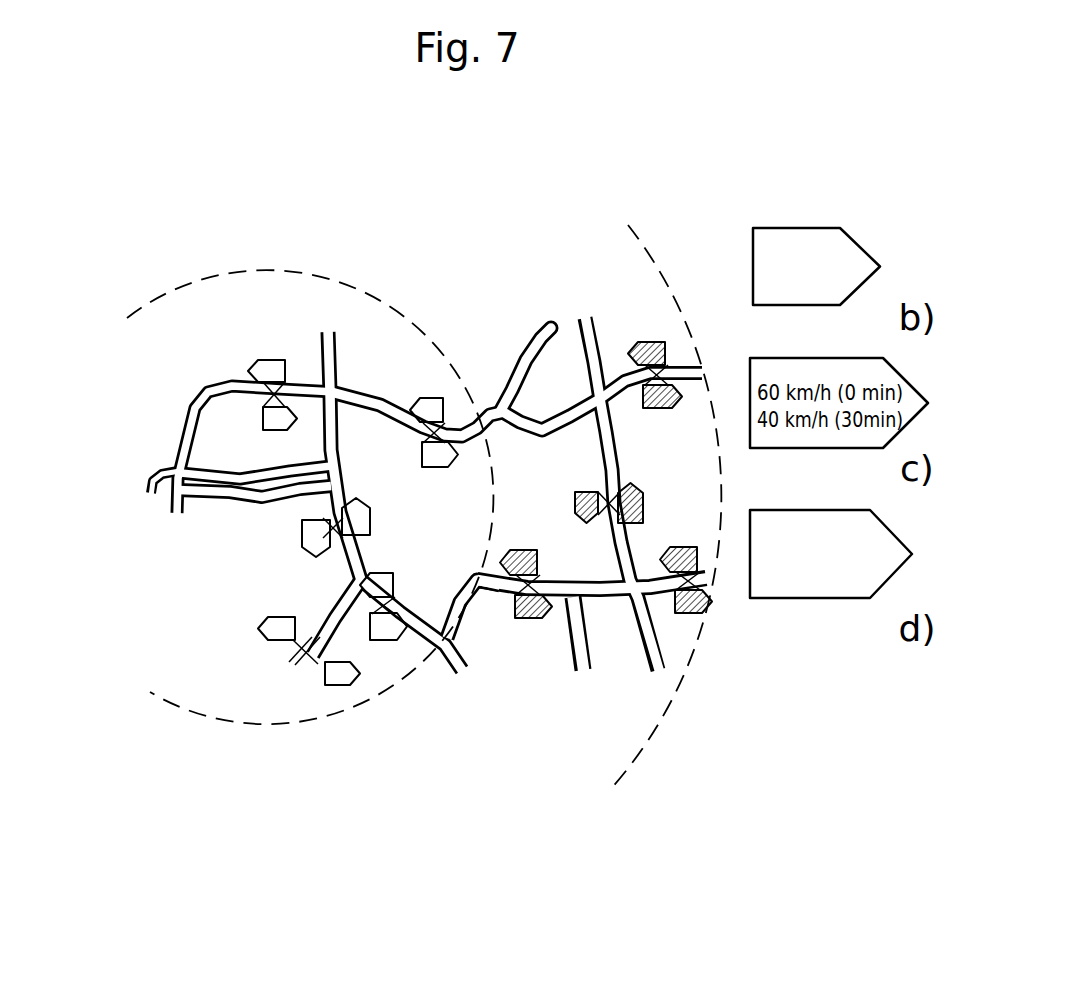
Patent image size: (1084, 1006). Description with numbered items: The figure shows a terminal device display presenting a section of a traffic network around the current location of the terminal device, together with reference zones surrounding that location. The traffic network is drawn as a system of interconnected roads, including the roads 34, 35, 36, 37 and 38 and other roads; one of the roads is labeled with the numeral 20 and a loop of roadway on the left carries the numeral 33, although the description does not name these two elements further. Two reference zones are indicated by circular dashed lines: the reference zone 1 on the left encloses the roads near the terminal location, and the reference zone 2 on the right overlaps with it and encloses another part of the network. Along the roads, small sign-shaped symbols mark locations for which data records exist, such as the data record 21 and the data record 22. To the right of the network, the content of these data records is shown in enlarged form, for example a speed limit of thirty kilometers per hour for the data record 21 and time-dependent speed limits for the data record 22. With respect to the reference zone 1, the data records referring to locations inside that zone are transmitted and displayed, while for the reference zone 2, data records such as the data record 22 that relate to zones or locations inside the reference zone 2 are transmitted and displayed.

The reference zone 1 is at (253, 302).
The reference zone 2 is at (613, 252).
The road 20 is at (255, 497).
The data record 21 is at (437, 462).
The data record 22 is at (528, 612).
The road loop 33 is at (188, 428).
The road 34 is at (333, 335).
The road 35 is at (522, 352).
The road 36 is at (610, 503).
The road 37 is at (610, 590).
The road 38 is at (687, 380).